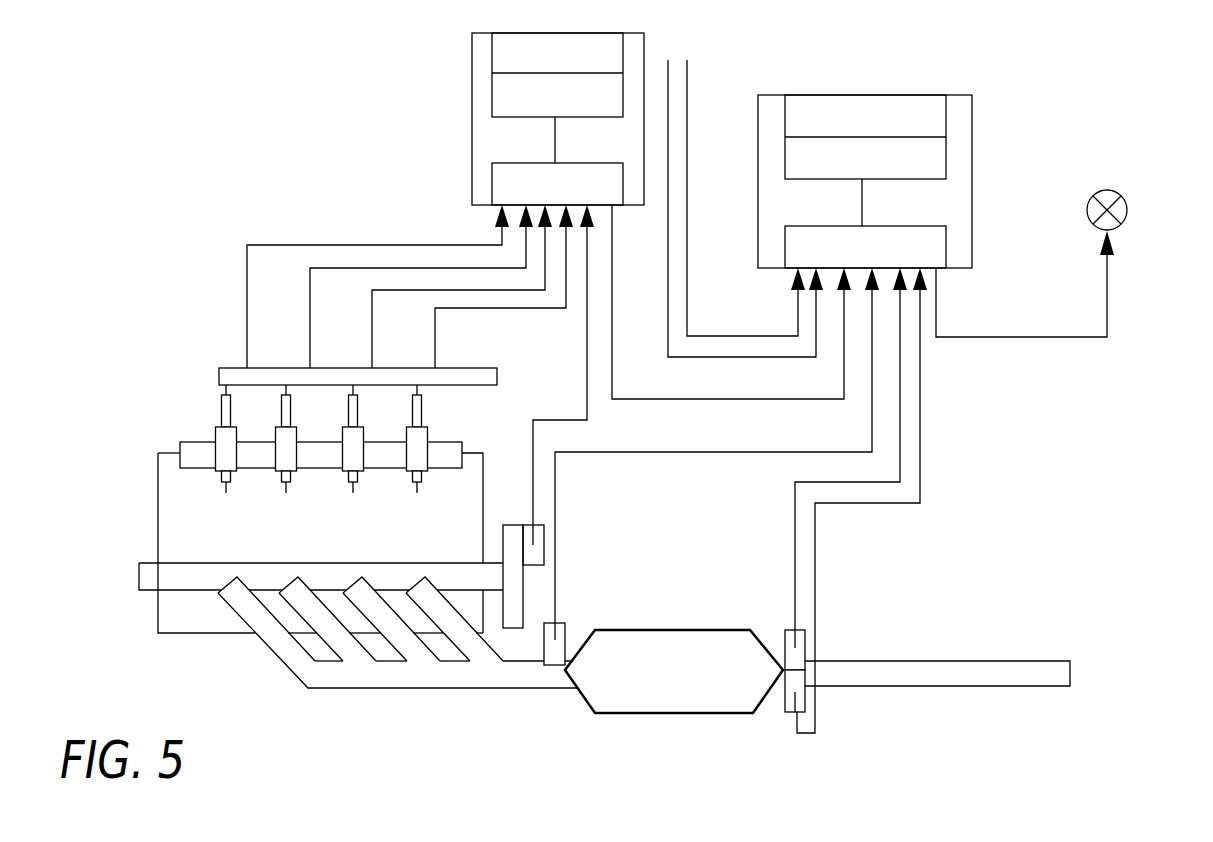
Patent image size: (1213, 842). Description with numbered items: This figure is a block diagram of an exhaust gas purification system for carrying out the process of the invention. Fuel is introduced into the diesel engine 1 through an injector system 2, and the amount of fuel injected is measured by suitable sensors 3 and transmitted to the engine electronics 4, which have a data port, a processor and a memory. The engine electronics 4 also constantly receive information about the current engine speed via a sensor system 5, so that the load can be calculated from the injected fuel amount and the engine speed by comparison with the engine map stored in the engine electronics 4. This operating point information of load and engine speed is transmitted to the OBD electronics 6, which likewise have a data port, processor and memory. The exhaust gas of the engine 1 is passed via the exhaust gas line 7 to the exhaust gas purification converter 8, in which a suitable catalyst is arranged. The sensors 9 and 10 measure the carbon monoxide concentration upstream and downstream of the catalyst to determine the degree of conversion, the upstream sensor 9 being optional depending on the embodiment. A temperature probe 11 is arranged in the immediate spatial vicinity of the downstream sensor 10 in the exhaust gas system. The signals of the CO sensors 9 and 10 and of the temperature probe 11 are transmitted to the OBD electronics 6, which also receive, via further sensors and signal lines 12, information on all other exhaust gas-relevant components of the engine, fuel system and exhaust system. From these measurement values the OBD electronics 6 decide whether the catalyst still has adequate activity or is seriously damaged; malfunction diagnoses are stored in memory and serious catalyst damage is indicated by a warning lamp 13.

The diesel engine 1 is at (338, 535).
The injector system 2 is at (221, 410).
The sensors 3 is at (215, 457).
The engine electronics 4 is at (472, 131).
The sensor system 5 is at (544, 553).
The OBD electronics 6 is at (972, 140).
The exhaust gas line 7 is at (374, 675).
The exhaust gas purification converter 8 is at (682, 683).
The carbon monoxide sensor 9 is at (566, 630).
The carbon monoxide sensor 10 is at (786, 632).
The temperature probe 11 is at (785, 713).
The signal lines 12 is at (740, 191).
The warning lamp 13 is at (1127, 209).